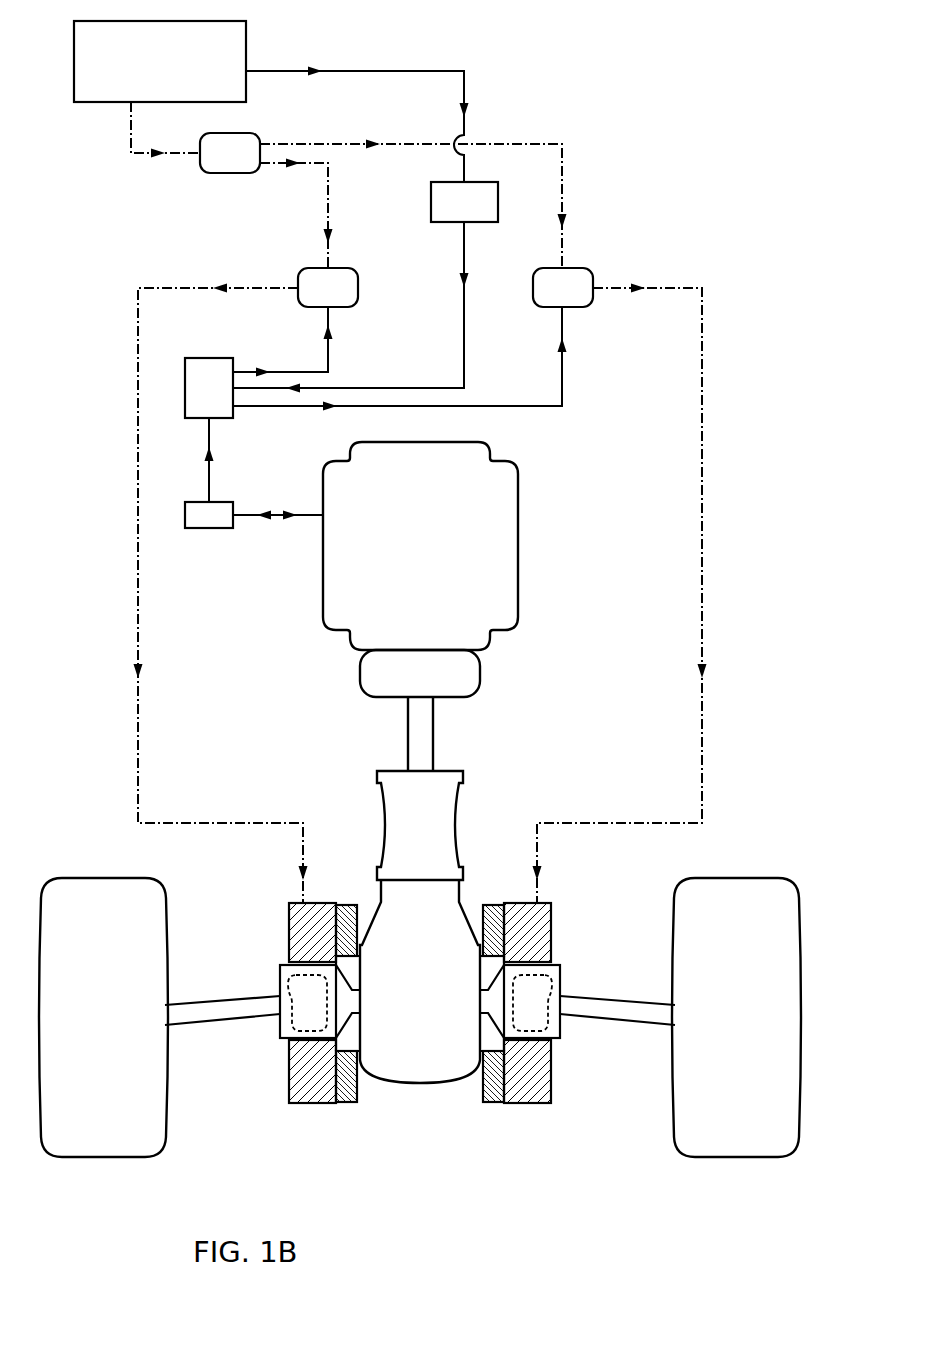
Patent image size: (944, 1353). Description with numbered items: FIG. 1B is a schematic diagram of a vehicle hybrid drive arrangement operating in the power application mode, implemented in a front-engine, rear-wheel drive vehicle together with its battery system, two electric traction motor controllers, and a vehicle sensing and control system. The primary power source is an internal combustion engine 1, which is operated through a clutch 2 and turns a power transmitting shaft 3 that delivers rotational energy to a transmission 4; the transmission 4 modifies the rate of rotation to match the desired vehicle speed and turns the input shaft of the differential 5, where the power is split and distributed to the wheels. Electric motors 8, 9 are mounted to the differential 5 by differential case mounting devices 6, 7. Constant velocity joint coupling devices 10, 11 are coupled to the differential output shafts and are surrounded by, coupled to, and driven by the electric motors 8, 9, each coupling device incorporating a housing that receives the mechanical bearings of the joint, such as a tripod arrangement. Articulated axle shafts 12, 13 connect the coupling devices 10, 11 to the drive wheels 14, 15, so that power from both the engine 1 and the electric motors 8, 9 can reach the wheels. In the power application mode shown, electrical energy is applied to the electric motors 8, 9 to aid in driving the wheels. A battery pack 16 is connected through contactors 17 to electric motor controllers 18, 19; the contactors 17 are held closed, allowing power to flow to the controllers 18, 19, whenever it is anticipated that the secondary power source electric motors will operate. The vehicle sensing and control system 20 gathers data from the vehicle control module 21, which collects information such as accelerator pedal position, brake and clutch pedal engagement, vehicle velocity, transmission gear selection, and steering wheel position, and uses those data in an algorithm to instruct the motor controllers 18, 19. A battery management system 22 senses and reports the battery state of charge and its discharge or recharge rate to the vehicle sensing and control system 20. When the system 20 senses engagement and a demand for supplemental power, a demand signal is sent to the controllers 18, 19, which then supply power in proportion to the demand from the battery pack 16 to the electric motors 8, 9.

The internal combustion engine 1 is at (518, 598).
The clutch 2 is at (480, 670).
The power transmitting shaft 3 is at (433, 750).
The transmission 4 is at (380, 805).
The differential 5 is at (447, 1082).
The differential case mounting device 6 is at (494, 1102).
The differential case mounting device 7 is at (345, 1102).
The electric motor 8 is at (530, 1103).
The electric motor 9 is at (313, 1103).
The constant velocity joint coupling device 10 is at (560, 977).
The constant velocity joint coupling device 11 is at (280, 977).
The articulated axle shaft 12 is at (588, 1020).
The articulated axle shaft 13 is at (252, 1020).
The drive wheel 14 is at (678, 898).
The drive wheel 15 is at (162, 898).
The battery pack 16 is at (112, 102).
The contactors 17 is at (240, 173).
The electric motor controller 18 is at (577, 307).
The electric motor controller 19 is at (343, 307).
The vehicle sensing and control system 20 is at (223, 358).
The vehicle control module 21 is at (222, 528).
The battery management system 22 is at (449, 222).